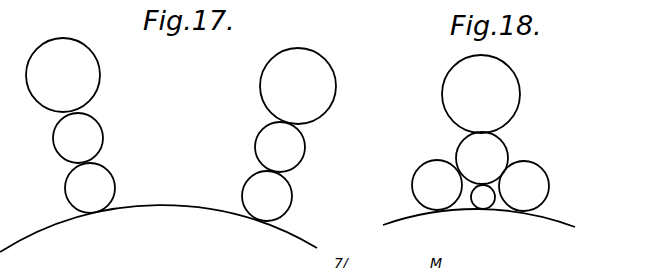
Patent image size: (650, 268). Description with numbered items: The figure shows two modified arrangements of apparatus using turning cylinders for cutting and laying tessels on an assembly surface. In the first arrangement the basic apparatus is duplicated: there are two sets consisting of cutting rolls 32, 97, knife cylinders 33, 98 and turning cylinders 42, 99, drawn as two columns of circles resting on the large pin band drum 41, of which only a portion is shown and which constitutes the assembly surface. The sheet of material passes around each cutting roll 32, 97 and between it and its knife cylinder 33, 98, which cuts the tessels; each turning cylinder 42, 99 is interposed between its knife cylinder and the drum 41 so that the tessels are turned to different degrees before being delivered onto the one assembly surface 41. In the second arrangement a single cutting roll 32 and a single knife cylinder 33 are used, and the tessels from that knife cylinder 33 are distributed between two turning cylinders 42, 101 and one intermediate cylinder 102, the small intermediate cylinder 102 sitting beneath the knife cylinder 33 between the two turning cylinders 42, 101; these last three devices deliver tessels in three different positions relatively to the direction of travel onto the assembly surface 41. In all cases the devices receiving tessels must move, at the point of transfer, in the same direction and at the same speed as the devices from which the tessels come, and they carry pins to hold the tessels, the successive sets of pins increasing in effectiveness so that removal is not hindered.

In FIG. 17, the cutting roll 32 is at (100, 62).
In FIG. 18, the cutting roll 32 is at (517, 75).
In FIG. 17, the knife cylinder 33 is at (97, 121).
In FIG. 18, the knife cylinder 33 is at (505, 142).
In FIG. 17, the turning cylinder 42 is at (93, 162).
In FIG. 18, the turning cylinder 42 is at (433, 162).
In FIG. 17, the pin band drum 41 is at (153, 205).
In FIG. 18, the pin band drum 41 is at (543, 215).
In FIG. 17, the cutting roll 97 is at (260, 78).
In FIG. 17, the knife cylinder 98 is at (256, 129).
In FIG. 17, the turning cylinder 99 is at (247, 180).
In FIG. 18, the turning cylinder 101 is at (540, 166).
In FIG. 18, the intermediate cylinder 102 is at (485, 201).